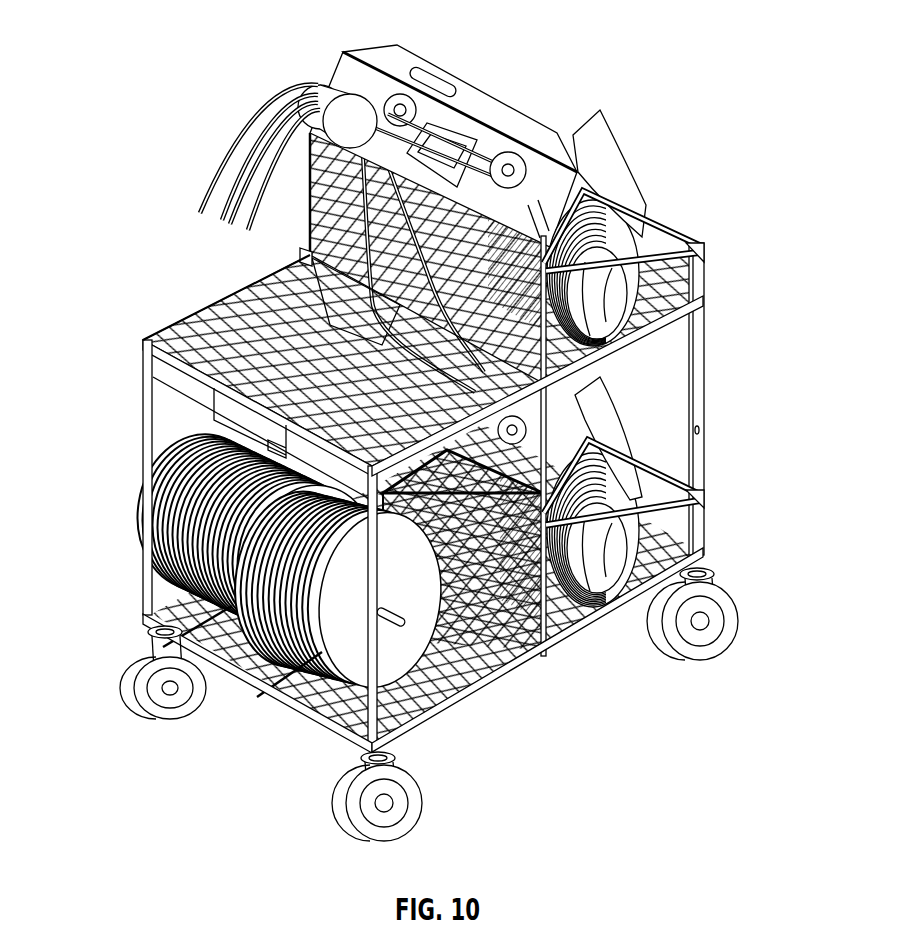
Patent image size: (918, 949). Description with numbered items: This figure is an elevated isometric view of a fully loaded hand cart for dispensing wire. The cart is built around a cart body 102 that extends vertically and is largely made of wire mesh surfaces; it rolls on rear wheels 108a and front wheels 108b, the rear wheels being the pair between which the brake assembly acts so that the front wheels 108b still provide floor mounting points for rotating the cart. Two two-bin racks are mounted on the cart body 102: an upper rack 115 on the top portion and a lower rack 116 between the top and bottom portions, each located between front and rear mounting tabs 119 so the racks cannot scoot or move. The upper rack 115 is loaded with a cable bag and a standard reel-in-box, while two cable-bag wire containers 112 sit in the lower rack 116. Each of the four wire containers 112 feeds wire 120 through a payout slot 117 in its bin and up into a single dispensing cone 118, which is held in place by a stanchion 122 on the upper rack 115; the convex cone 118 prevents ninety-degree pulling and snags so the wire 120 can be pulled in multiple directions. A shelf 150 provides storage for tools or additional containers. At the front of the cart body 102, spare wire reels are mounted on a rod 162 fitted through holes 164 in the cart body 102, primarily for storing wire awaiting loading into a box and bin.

The cart body 102 is at (706, 390).
The rear wheels 108a is at (742, 618).
The front wheels 108b is at (136, 676).
The wire containers 112 is at (440, 66).
The upper rack 115 is at (708, 254).
The lower rack 116 is at (708, 502).
The payout slot 117 is at (517, 165).
The dispensing cone 118 is at (312, 84).
The mounting tabs 119 is at (300, 258).
The wire 120 is at (289, 82).
The stanchion 122 is at (350, 50).
The shelf 150 is at (200, 332).
The rod 162 is at (398, 612).
The holes 164 is at (335, 698).